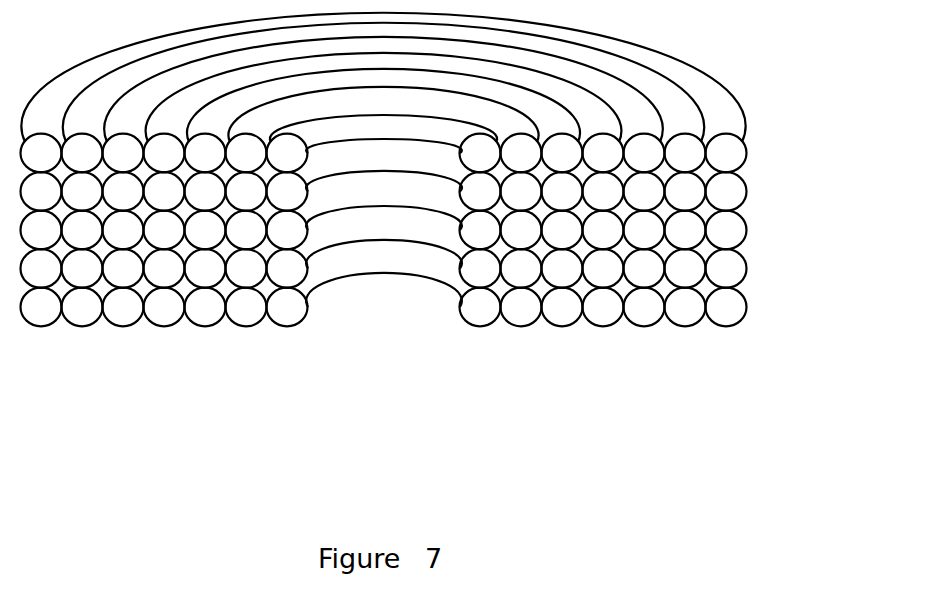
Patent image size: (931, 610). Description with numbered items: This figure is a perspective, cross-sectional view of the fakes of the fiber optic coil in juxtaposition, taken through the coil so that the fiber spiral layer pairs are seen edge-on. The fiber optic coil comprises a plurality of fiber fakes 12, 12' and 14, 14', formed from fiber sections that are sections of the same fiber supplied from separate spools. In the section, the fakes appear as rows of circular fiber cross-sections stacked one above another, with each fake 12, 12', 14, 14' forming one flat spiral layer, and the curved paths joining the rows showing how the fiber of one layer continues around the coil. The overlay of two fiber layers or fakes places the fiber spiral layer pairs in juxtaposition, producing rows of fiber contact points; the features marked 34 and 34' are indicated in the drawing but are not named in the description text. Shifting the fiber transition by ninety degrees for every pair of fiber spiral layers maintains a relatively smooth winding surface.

The fiber fake 12 is at (441, 227).
The fiber fake 12' is at (444, 264).
The fiber fake 14 is at (441, 230).
The fiber fake 14' is at (444, 191).
The strand 34 is at (380, 395).
The strand contact point 34' is at (383, 364).